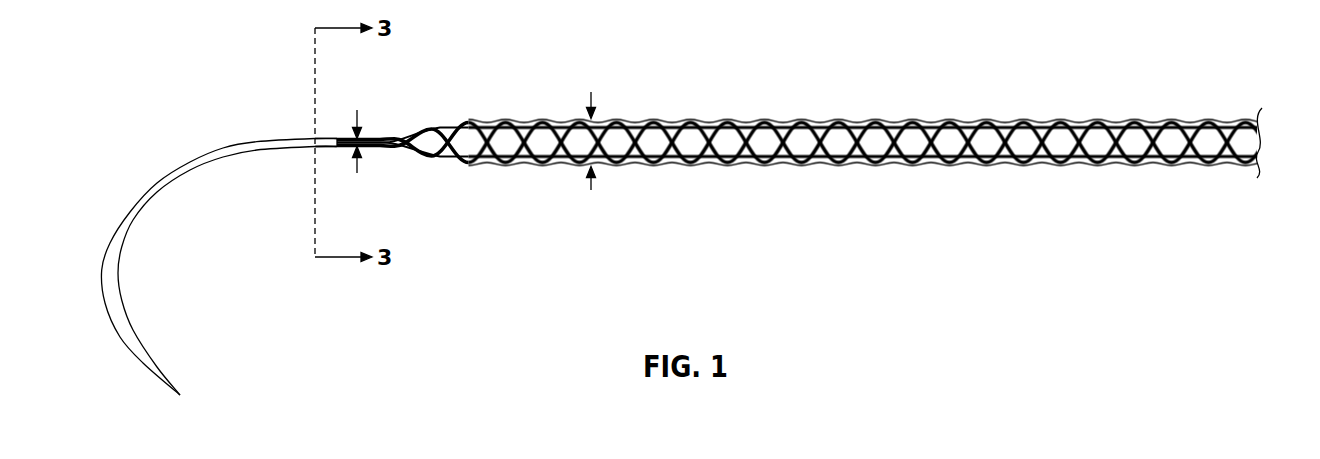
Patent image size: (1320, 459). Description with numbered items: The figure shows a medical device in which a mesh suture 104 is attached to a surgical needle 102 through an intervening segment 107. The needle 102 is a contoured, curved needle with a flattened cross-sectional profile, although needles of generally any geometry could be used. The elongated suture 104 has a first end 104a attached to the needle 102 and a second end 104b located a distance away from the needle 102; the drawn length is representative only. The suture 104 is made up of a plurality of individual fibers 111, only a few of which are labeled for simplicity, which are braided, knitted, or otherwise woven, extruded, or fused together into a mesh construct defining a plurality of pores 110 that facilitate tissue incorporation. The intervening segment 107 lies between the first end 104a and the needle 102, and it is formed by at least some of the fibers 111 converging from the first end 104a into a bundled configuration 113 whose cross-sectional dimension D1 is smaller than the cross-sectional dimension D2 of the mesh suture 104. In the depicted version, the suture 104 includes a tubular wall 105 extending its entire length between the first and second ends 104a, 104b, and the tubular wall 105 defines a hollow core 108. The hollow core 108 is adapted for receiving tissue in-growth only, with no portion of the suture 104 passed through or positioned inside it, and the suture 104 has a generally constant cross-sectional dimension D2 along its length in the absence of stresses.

The surgical needle 102 is at (163, 155).
The intervening segment 107 is at (327, 130).
The bundled configuration 113 is at (332, 149).
The cross-sectional dimension of the bundled configuration D1 is at (358, 117).
The elongated suture 104 is at (799, 139).
The first end 104a is at (519, 118).
The second end 104b is at (1244, 108).
The tubular wall 105 is at (865, 150).
The hollow core 108 is at (778, 174).
The pores 110 is at (660, 121).
The fibers 111 is at (748, 121).
The cross-sectional dimension of the mesh suture D2 is at (590, 185).